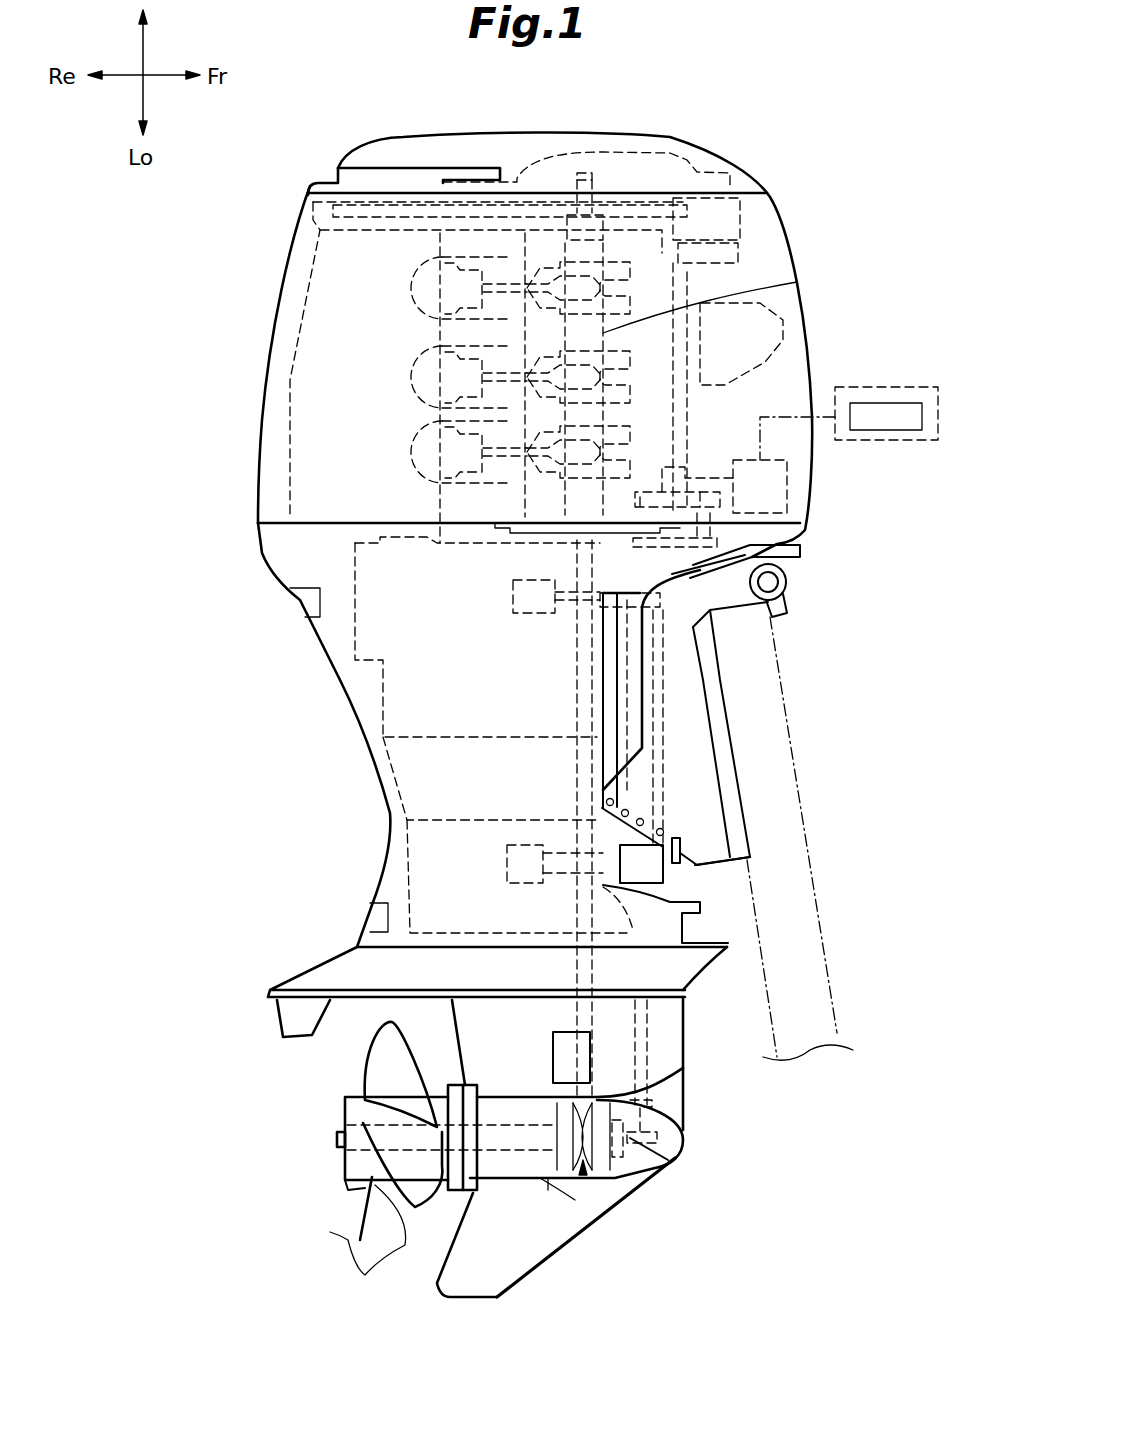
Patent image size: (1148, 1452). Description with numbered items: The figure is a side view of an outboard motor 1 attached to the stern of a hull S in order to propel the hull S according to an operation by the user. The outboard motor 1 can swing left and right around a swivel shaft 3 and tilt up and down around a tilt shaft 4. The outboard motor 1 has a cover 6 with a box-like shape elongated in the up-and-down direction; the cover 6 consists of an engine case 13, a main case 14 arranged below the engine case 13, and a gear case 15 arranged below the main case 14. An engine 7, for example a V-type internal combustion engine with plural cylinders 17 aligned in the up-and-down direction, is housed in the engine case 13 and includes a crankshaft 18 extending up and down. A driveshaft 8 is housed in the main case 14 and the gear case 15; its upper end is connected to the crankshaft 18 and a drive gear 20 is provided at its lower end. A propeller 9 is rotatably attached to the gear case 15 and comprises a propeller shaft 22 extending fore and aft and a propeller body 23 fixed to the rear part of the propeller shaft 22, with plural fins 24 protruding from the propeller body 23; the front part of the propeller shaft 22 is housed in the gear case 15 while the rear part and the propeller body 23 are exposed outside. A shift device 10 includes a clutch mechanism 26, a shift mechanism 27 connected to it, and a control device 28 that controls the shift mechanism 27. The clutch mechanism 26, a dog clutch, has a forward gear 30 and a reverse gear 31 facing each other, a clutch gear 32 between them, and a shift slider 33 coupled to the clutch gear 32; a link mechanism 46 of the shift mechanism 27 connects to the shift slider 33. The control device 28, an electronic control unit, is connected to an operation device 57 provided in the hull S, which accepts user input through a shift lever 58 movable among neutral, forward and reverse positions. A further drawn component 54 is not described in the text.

The outboard motor 1 is at (771, 96).
The swivel shaft 3 is at (657, 712).
The tilt shaft 4 is at (790, 581).
The cover 6 is at (273, 228).
The engine 7 is at (397, 487).
The driveshaft 8 is at (575, 672).
The propeller 9 is at (338, 1103).
The shift device 10 is at (648, 475).
The engine case 13 is at (283, 272).
The main case 14 is at (338, 677).
The gear case 15 is at (687, 1100).
The cylinders 17 is at (403, 297).
The crankshaft 18 is at (797, 282).
The drive gear 20 is at (687, 1073).
The propeller shaft 22 is at (503, 1150).
The propeller body 23 is at (345, 1180).
The fins 24 is at (372, 1062).
The clutch mechanism 26 is at (586, 1180).
The shift mechanism 27 is at (694, 480).
The control device 28 is at (797, 474).
The forward gear 30 is at (647, 1160).
The reverse gear 31 is at (546, 1180).
The clutch gear 32 is at (677, 1162).
The shift slider 33 is at (660, 1135).
The link mechanism 46 is at (723, 533).
The swivel bracket 54 is at (648, 930).
The operation device 57 is at (928, 387).
The shift lever 58 is at (866, 403).
The hull S is at (792, 749).